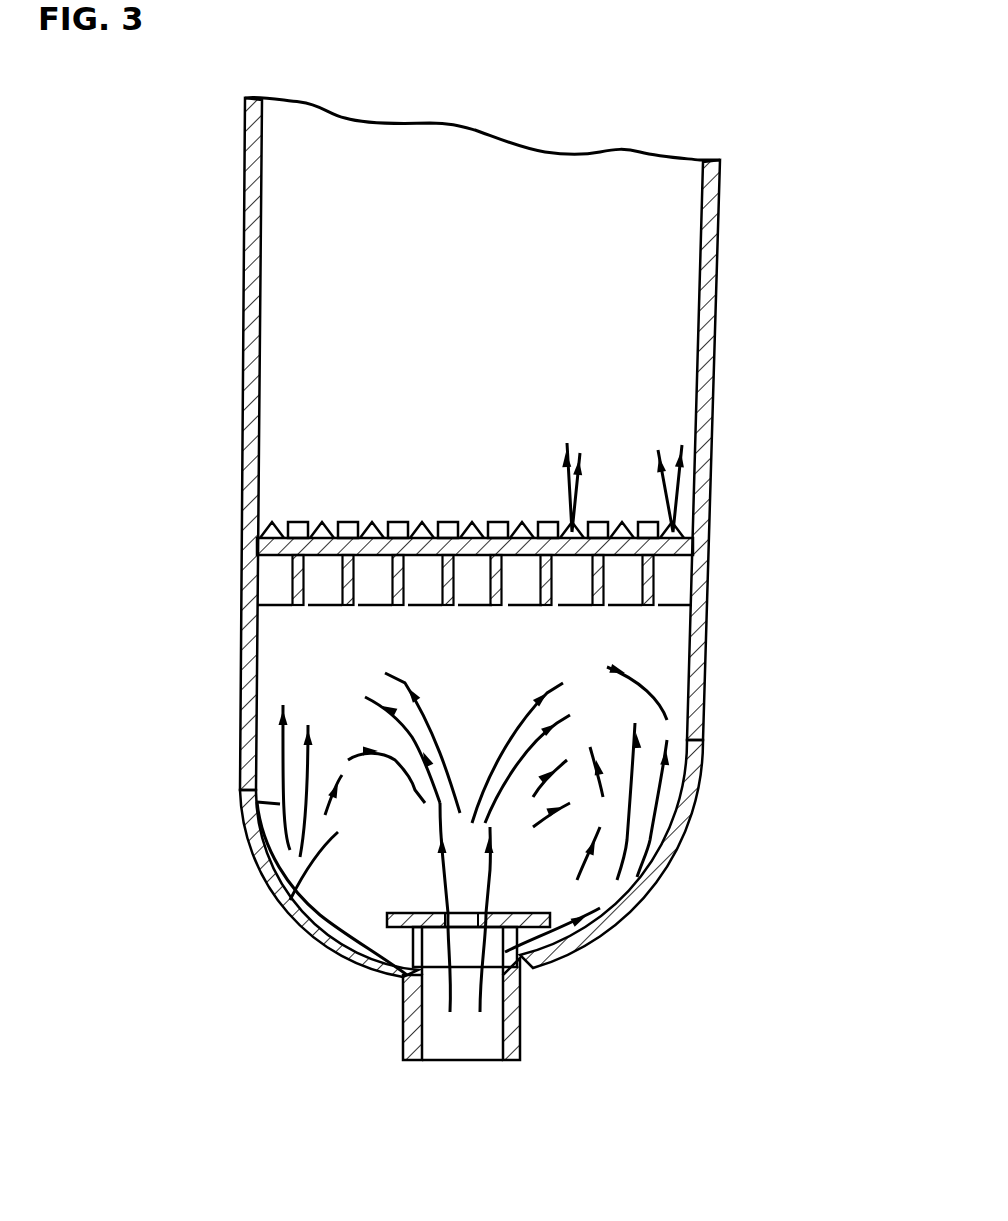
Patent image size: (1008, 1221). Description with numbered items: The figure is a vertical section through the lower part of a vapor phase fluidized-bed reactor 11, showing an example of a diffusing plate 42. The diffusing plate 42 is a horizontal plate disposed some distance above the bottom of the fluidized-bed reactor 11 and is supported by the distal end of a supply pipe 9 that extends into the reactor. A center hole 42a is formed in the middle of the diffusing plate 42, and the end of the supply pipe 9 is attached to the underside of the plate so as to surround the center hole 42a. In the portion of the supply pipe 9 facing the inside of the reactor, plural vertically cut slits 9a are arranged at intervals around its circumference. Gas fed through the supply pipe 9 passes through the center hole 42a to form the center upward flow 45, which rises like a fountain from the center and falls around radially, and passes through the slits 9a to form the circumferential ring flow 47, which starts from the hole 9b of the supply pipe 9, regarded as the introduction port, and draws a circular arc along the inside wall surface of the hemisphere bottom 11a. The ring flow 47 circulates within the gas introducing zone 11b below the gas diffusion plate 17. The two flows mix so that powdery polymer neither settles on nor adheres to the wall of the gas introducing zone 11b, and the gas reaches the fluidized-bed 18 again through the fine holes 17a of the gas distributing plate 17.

The fluidized-bed reactor 11 is at (567, 528).
The hemisphere bottom 11a is at (640, 903).
The gas introducing zone 11b is at (321, 657).
The gas diffusion plate 17 is at (371, 556).
The fine holes 17a is at (471, 556).
The fluidized-bed 18 is at (401, 373).
The diffusing plate 42 is at (385, 921).
The center hole 42a is at (480, 913).
The center upward flow 45 is at (513, 722).
The circumferential ring flow 47 is at (257, 802).
The supply pipe 9 is at (403, 1034).
The slits 9a is at (480, 1003).
The hole 9b is at (490, 978).